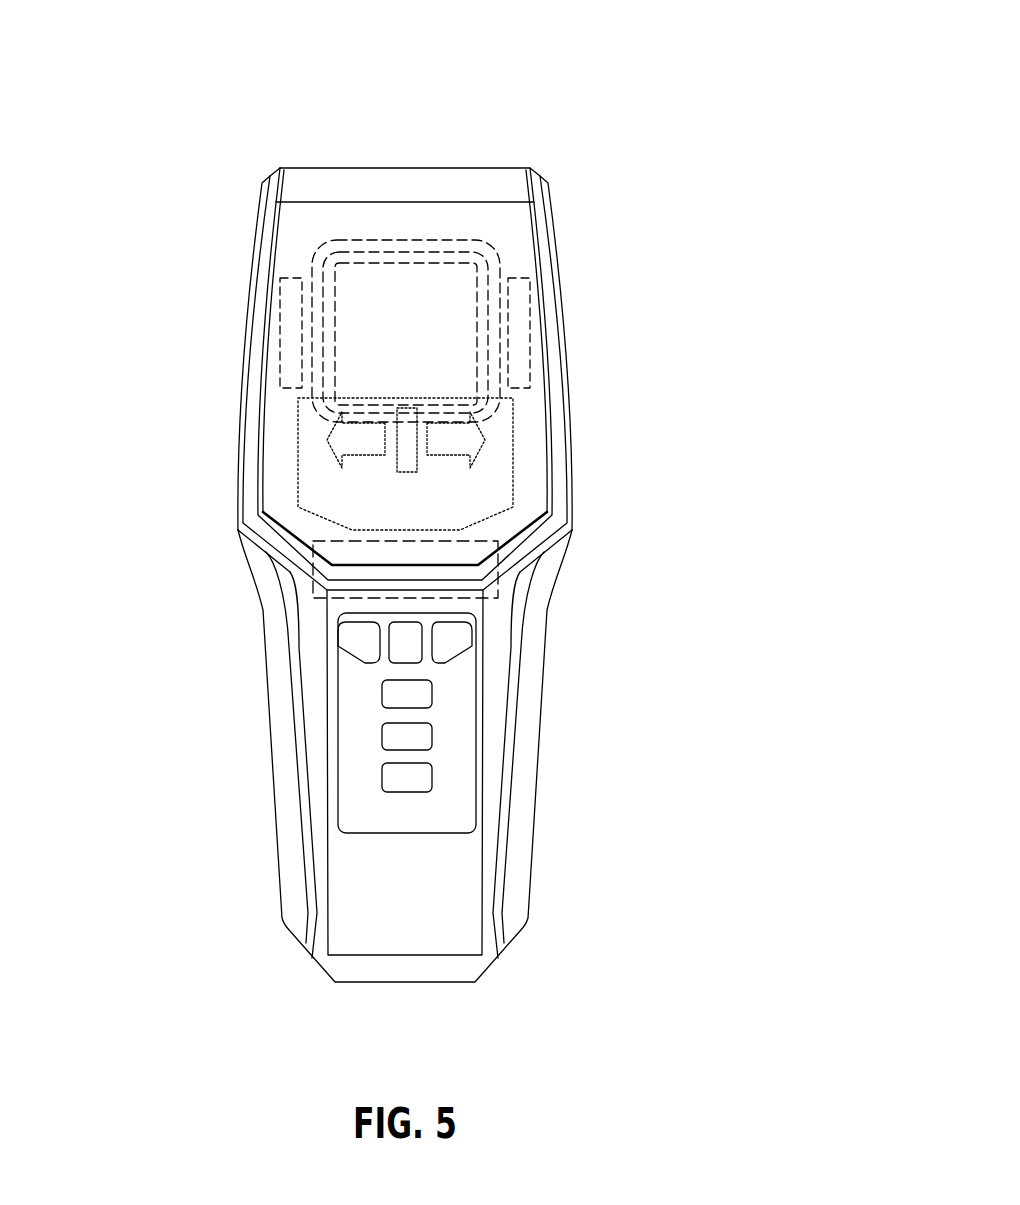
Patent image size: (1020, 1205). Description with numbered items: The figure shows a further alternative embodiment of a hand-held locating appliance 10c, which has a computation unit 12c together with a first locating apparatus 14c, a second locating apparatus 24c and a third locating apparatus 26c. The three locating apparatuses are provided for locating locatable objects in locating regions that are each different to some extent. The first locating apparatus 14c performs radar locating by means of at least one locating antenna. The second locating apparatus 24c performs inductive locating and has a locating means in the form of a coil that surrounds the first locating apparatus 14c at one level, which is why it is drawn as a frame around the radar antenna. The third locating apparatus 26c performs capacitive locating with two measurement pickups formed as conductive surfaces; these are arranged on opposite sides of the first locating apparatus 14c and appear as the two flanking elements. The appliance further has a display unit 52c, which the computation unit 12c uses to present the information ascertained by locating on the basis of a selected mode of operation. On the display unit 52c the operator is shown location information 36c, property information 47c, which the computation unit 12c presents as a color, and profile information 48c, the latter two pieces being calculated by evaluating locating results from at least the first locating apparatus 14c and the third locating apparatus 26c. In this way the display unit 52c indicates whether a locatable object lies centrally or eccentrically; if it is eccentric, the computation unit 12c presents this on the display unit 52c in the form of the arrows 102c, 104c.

The hand-held locating appliance 10c is at (556, 128).
The computation unit 12c is at (500, 545).
The first locating apparatus 14c is at (478, 273).
The second locating apparatus 24c is at (313, 267).
The third locating apparatus 26c is at (288, 352).
The location information 36c is at (342, 483).
The property information 47c is at (405, 374).
The profile information 48c is at (405, 565).
The display unit 52c is at (498, 490).
The arrow 102c is at (332, 447).
The arrow 104c is at (483, 450).